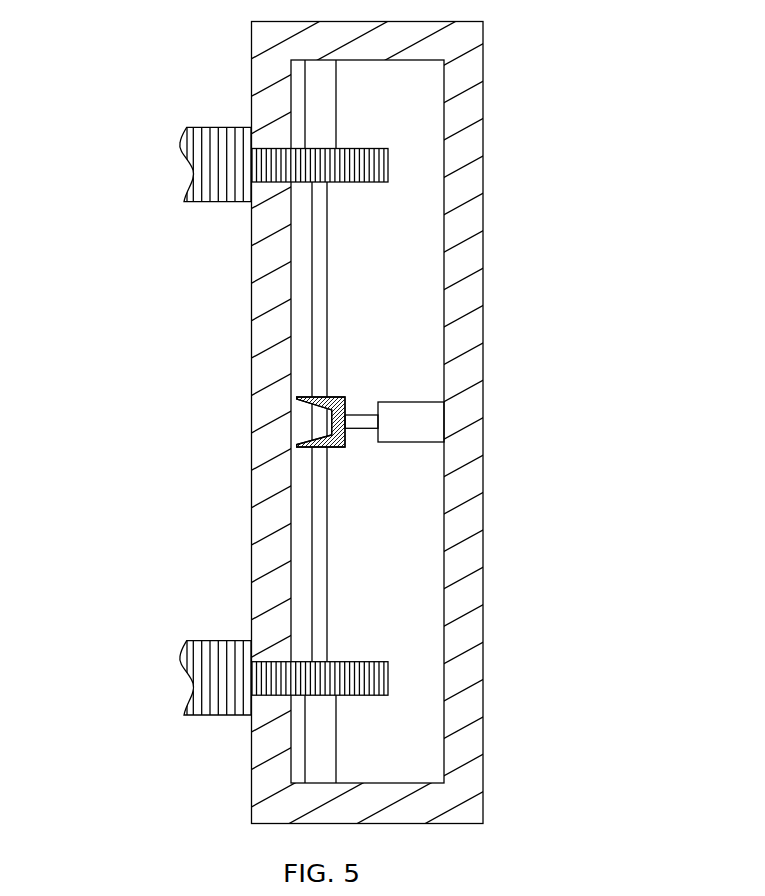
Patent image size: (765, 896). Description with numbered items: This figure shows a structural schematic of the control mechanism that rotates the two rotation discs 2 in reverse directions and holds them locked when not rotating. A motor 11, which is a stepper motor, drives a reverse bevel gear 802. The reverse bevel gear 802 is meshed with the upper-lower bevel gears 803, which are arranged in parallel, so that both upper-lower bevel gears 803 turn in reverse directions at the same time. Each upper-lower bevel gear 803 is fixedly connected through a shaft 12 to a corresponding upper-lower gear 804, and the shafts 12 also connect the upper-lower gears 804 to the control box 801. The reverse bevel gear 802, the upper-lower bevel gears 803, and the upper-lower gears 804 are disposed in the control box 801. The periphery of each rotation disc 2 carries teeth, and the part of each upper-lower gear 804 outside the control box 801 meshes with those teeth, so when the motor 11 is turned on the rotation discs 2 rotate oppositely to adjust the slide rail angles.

The rotation disc 2 is at (151, 421).
The motor 11 is at (496, 397).
The shaft 12 is at (366, 421).
The control box 801 is at (271, 448).
The reverse bevel gear 802 is at (391, 357).
The upper-lower bevel gear 803 is at (368, 391).
The upper-lower gear 804 is at (347, 422).